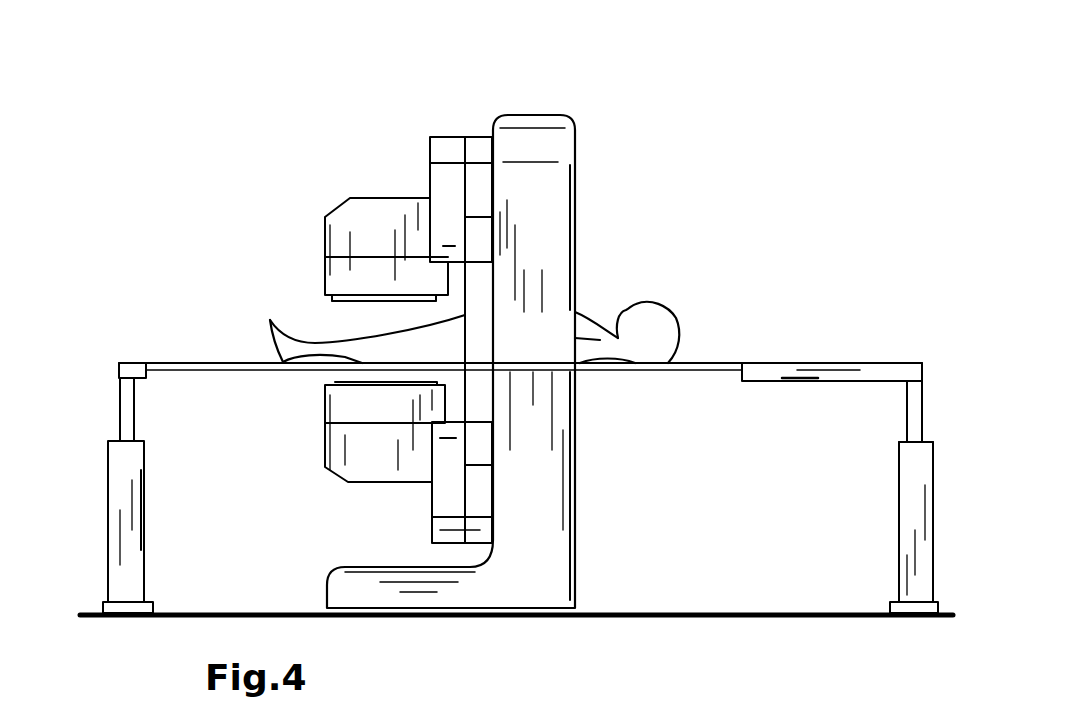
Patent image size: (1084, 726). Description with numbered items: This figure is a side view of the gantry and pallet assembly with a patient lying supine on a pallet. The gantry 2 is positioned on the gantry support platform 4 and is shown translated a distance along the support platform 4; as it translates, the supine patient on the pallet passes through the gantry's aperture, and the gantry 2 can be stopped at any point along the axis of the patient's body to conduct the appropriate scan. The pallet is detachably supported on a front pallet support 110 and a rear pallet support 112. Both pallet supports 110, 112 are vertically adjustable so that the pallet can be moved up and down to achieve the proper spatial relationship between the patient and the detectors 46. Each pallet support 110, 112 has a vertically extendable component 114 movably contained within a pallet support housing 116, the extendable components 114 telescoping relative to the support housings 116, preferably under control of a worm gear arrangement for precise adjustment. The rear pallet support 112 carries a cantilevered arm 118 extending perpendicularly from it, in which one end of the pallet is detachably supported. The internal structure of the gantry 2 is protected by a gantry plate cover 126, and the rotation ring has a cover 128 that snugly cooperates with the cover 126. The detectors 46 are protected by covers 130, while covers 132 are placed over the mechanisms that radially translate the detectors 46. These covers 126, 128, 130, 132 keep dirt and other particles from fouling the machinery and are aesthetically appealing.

The gantry 2 is at (485, 315).
The gantry support platform 4 is at (658, 620).
The detectors 46 is at (373, 297).
The front pallet support 110 is at (520, 495).
The rear pallet support 112 is at (867, 496).
The vertically extendable component 114 is at (128, 412).
The pallet support housing 116 is at (125, 552).
The cantilevered arm 118 is at (797, 368).
The gantry plate cover 126 is at (533, 133).
The rotation ring cover 128 is at (477, 280).
The detector covers 130 is at (358, 222).
The detector translation mechanism covers 132 is at (445, 152).